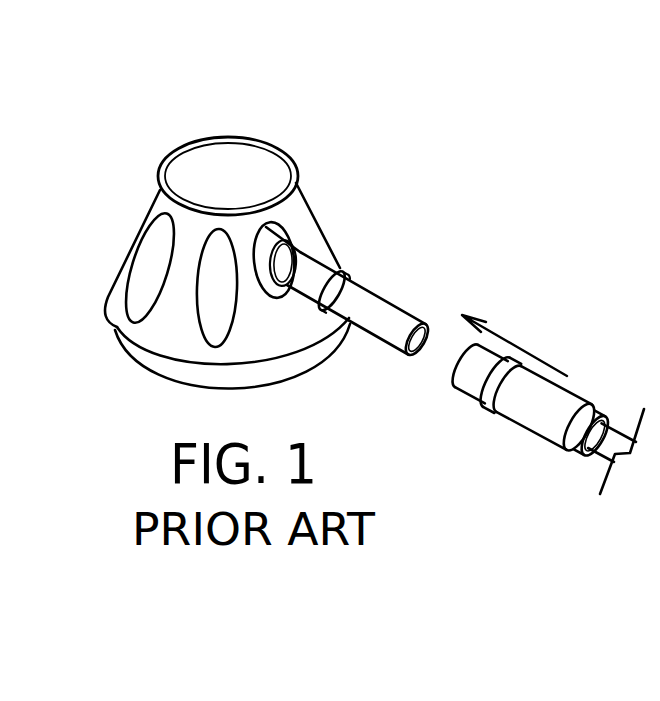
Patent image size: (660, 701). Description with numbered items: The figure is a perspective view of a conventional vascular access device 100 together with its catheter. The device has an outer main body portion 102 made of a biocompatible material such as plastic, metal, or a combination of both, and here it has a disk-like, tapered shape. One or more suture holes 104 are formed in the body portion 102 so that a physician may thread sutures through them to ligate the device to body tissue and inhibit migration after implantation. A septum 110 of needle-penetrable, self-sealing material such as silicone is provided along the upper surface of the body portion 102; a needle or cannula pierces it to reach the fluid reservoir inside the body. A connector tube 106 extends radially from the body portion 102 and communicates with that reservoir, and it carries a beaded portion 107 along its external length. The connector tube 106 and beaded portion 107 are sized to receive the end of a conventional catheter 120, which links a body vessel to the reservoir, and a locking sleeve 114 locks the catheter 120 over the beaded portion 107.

The vascular access device 100 is at (280, 226).
The outer main body portion 102 is at (250, 219).
The suture holes 104 is at (153, 275).
The connector tube 106 is at (392, 305).
The beaded portion 107 is at (353, 275).
The septum 110 is at (243, 157).
The locking sleeve 114 is at (529, 401).
The catheter 120 is at (478, 398).